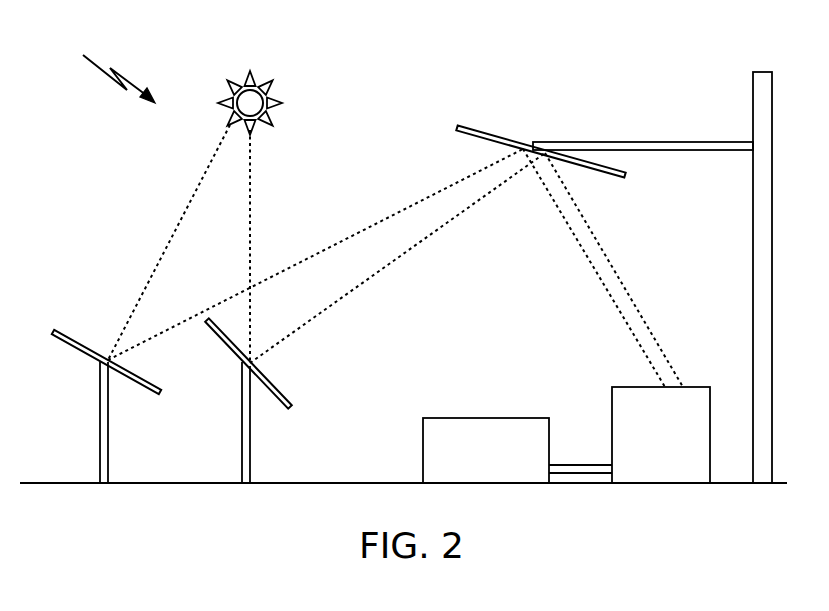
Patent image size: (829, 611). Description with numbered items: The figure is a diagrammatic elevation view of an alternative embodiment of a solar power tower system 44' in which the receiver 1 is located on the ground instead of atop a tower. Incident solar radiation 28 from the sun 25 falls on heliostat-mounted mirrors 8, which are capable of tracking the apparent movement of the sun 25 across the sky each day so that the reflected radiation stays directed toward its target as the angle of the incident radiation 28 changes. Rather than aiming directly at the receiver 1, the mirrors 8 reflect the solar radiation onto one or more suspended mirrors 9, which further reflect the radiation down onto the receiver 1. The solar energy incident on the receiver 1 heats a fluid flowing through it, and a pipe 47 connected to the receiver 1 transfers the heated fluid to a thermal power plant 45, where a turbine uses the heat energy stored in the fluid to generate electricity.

The solar power tower system 44' is at (109, 66).
The sun 25 is at (271, 94).
The incident solar radiation 28 is at (395, 256).
The suspended mirrors 9 is at (540, 129).
The mirrors 8 is at (280, 400).
The thermal power plant 45 is at (486, 413).
The pipe 47 is at (579, 420).
The receiver 1 is at (666, 445).